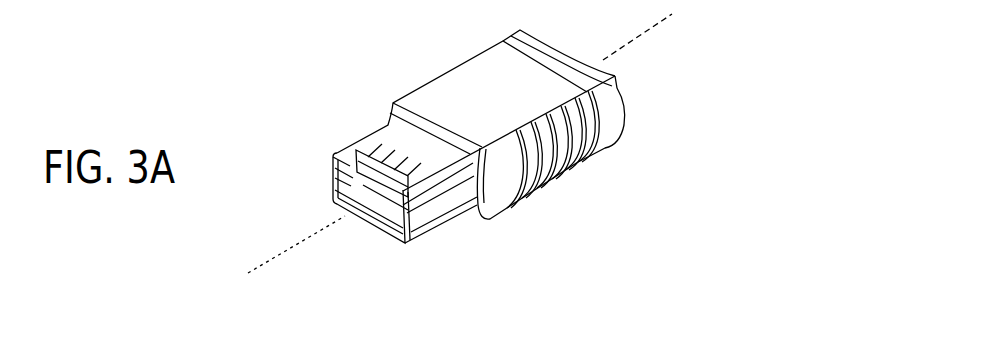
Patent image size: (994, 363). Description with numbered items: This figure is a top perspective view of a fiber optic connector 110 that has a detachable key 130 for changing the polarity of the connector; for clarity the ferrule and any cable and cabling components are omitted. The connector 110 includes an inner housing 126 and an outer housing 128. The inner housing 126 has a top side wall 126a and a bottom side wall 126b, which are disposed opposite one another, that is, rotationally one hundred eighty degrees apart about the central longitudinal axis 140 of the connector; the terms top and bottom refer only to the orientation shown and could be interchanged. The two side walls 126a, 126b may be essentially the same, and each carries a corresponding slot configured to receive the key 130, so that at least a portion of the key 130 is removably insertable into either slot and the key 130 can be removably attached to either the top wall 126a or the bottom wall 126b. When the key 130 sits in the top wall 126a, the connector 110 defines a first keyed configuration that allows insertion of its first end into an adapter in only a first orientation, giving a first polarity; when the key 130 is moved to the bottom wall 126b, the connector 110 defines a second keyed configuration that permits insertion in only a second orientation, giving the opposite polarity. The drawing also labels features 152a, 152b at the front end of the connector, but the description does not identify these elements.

The connector 110 is at (476, 183).
The inner housing 126 is at (430, 196).
The top side wall 126a is at (352, 152).
The bottom side wall 126b is at (388, 240).
The outer housing 128 is at (570, 172).
The detachable key 130 is at (405, 200).
The central longitudinal axis 140 is at (661, 27).
The first contacts 152a is at (357, 179).
The second contacts 152b is at (375, 220).